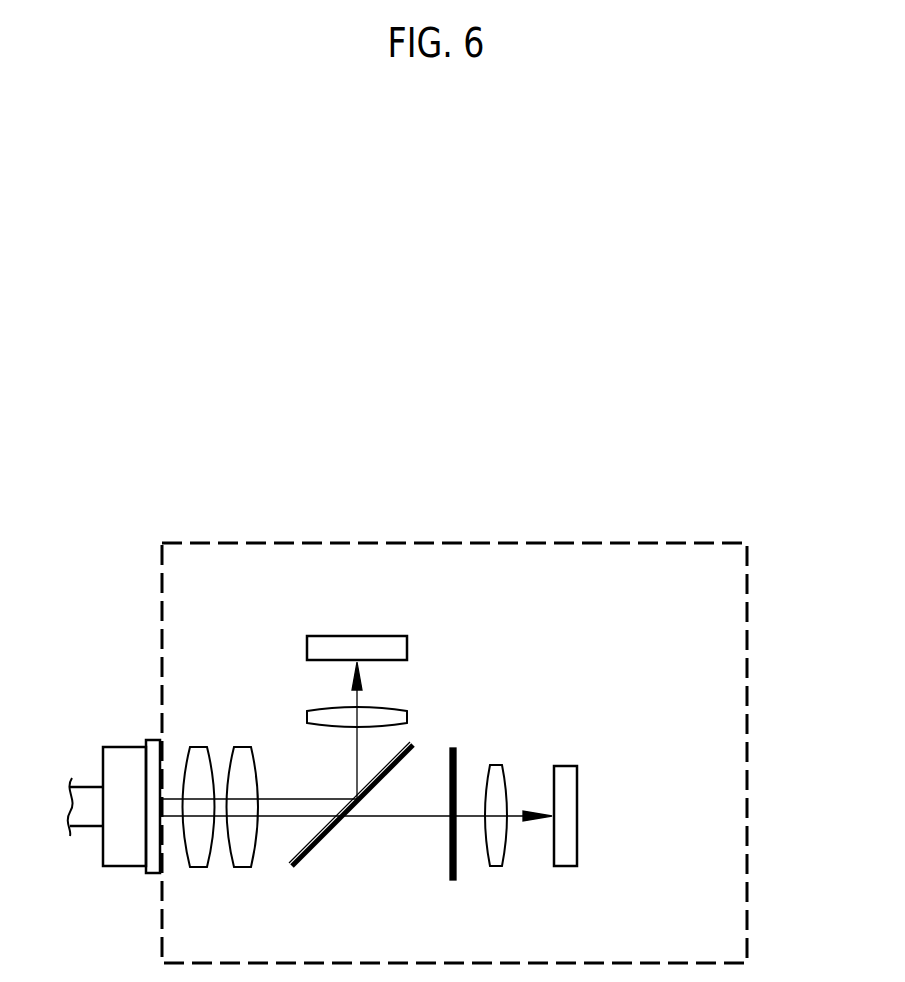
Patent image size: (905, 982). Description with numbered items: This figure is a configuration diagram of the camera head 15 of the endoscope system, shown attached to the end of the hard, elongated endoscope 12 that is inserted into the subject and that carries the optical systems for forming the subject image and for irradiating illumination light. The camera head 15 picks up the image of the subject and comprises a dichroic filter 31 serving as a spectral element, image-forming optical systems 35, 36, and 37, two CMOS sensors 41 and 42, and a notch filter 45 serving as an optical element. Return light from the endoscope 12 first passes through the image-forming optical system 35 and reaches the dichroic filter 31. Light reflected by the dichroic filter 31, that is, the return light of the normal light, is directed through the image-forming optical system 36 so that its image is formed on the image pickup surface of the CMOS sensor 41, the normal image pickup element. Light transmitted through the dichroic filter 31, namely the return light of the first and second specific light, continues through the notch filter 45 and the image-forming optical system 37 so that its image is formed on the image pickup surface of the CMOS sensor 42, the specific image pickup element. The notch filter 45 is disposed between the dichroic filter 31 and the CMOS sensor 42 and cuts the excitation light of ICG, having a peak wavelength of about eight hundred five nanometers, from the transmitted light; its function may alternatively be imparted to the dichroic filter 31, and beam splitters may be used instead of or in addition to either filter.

The endoscope 12 is at (123, 746).
The camera head 15 is at (749, 580).
The dichroic filter 31 is at (298, 868).
The image-forming optical system 35 is at (224, 720).
The image-forming optical system 36 is at (408, 716).
The image-forming optical system 37 is at (496, 868).
The CMOS sensor 41 is at (355, 635).
The CMOS sensor 42 is at (578, 815).
The notch filter 45 is at (453, 881).